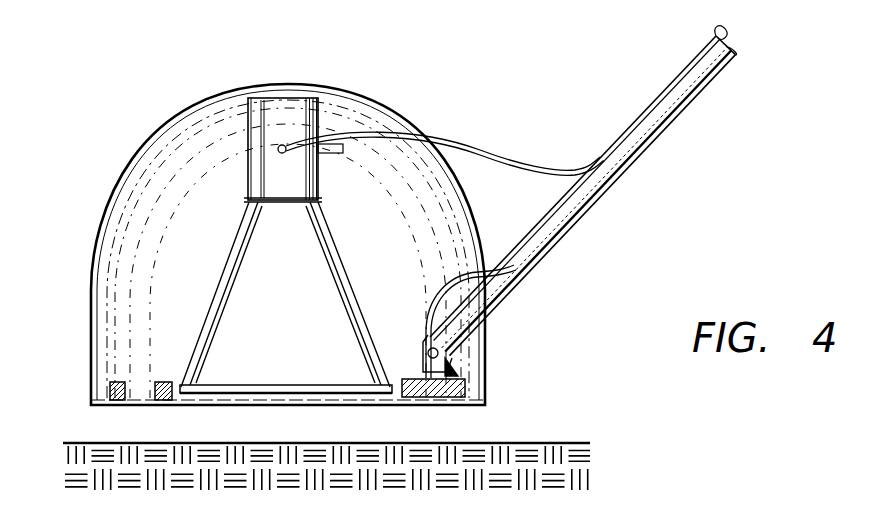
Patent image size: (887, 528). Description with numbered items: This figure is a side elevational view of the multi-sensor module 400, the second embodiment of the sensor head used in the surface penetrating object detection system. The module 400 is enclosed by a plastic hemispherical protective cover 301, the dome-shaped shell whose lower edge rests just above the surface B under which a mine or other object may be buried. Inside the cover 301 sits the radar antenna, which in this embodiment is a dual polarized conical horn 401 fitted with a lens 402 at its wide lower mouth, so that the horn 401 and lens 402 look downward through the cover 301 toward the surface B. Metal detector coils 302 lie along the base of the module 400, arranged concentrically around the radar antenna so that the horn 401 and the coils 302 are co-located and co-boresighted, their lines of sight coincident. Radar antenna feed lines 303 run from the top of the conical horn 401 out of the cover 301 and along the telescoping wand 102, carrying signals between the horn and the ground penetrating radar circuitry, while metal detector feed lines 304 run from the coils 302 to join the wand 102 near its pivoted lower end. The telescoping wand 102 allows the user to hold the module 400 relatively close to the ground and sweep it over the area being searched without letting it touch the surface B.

The multi-sensor module 400 is at (146, 83).
The plastic hemispherical protective cover 301 is at (99, 222).
The metal detector coils 302 is at (156, 383).
The radar antenna feed lines 303 is at (553, 152).
The metal detector feed lines 304 is at (512, 266).
The dual polarized conical horn 401 is at (304, 252).
The lens 402 is at (315, 393).
The telescoping wand 102 is at (632, 178).
The surface B is at (569, 443).